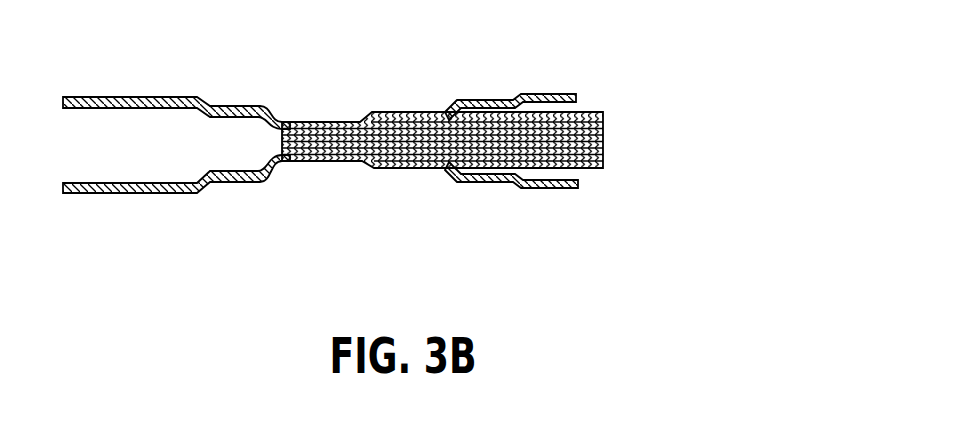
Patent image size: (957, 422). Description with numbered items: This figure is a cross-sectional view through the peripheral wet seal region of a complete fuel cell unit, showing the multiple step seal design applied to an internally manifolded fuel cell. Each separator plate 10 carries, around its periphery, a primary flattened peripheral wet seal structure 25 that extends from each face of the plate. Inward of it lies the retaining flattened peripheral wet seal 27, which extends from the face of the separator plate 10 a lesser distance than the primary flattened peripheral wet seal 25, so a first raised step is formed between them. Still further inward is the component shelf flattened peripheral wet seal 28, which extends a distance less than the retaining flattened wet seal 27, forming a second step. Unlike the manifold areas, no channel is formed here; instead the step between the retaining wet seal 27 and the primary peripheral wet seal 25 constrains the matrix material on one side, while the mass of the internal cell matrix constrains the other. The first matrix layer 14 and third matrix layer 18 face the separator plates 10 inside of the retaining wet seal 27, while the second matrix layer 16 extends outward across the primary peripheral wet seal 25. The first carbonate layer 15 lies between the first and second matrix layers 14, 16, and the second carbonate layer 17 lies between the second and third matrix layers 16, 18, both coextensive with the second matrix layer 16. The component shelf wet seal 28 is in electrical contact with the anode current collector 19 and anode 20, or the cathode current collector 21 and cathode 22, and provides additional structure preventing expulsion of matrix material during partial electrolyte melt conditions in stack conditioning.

The separator plate 10 is at (137, 97).
The first matrix layer 14 is at (607, 149).
The first carbonate layer 15 is at (607, 145).
The second matrix layer 16 is at (607, 138).
The second carbonate layer 17 is at (607, 133).
The third matrix layer 18 is at (607, 128).
The anode current collector 19 is at (607, 160).
The anode 20 is at (607, 153).
The cathode current collector 21 is at (607, 118).
The cathode 22 is at (607, 123).
The primary flattened peripheral wet seal structure 25 is at (320, 162).
The retaining flattened peripheral wet seal 27 is at (417, 168).
The component shelf flattened peripheral wet seal 28 is at (495, 183).